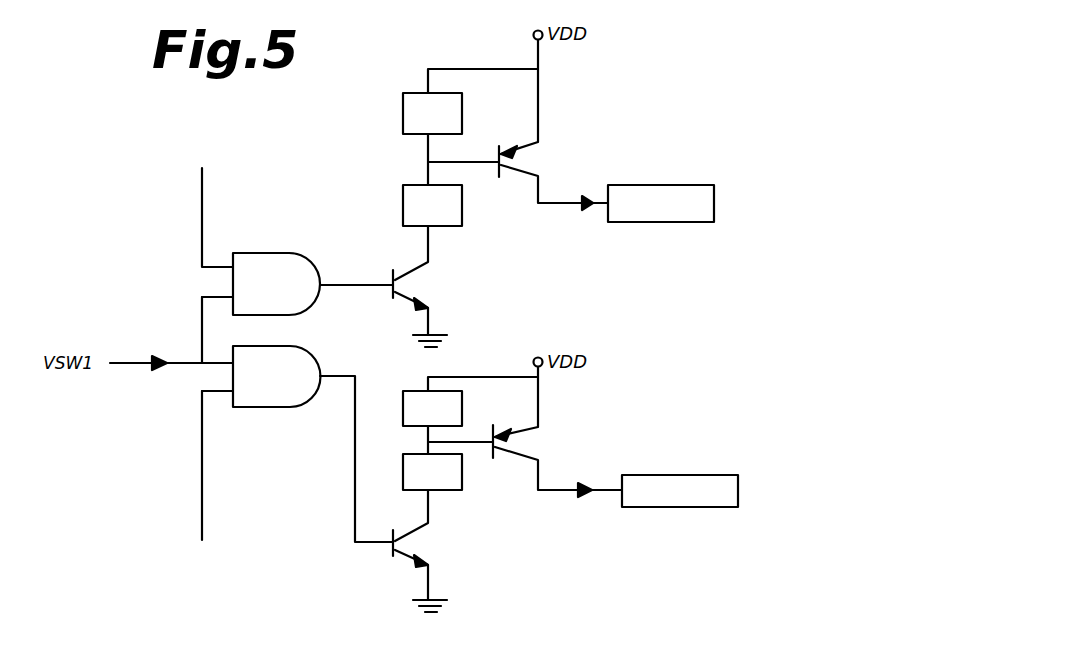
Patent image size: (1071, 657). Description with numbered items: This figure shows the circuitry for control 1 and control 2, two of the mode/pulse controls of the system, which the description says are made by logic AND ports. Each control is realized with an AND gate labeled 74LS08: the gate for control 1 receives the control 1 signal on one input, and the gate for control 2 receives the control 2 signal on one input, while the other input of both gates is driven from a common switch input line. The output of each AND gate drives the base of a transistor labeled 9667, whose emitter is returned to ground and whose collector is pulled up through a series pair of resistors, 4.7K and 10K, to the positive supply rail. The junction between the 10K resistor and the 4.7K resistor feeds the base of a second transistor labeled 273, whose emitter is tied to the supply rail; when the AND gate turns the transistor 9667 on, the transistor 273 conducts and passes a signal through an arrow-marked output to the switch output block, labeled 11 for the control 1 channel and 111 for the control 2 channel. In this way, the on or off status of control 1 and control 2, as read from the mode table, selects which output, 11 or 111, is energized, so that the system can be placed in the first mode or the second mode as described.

The control 1 is at (197, 205).
The control 2 is at (206, 478).
The AND gate 74LS08 is at (276, 330).
The NPN transistor 9667 is at (438, 419).
The 10K resistor 10K is at (432, 259).
The 4.7K resistor 4.7K is at (432, 337).
The ECG 273 PNP transistor 273 is at (560, 279).
The VSW#11 output 11 is at (648, 203).
The VSW#111 output 111 is at (658, 491).